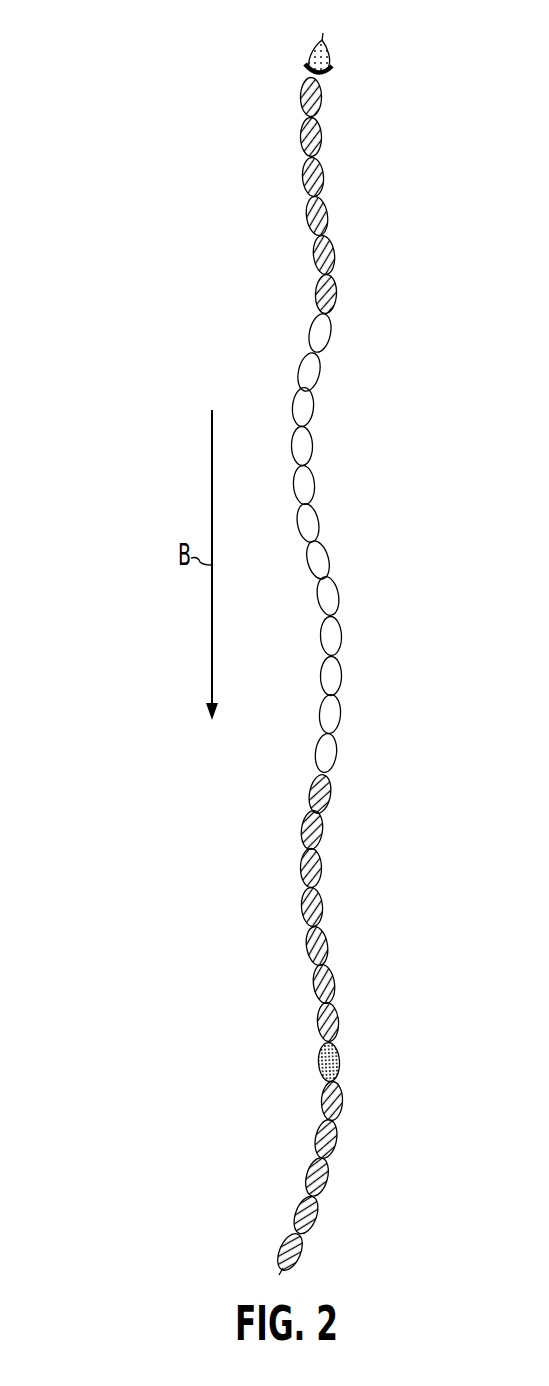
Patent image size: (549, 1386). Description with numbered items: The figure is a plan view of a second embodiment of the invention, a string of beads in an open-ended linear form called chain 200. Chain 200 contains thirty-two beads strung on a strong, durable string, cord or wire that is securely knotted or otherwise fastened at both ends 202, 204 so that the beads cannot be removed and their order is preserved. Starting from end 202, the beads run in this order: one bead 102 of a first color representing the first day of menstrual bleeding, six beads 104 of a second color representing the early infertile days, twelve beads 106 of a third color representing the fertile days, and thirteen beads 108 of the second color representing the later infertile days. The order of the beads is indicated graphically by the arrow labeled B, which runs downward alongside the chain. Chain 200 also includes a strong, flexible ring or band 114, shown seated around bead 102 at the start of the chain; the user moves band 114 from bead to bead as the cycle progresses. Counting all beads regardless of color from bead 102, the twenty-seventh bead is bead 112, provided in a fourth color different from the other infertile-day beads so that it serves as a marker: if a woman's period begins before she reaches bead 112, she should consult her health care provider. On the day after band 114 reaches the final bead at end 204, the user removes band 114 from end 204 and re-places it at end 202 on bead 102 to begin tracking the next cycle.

The chain 200 is at (126, 98).
The end 202 is at (317, 33).
The bead of a first color 102 is at (333, 55).
The band 114 is at (304, 64).
The beads of a second color 104 is at (385, 82).
The beads of a third color 106 is at (385, 318).
The beads of the second color 108 is at (385, 775).
The bead of a fourth color 112 is at (316, 1057).
The final bead end 204 is at (276, 1270).